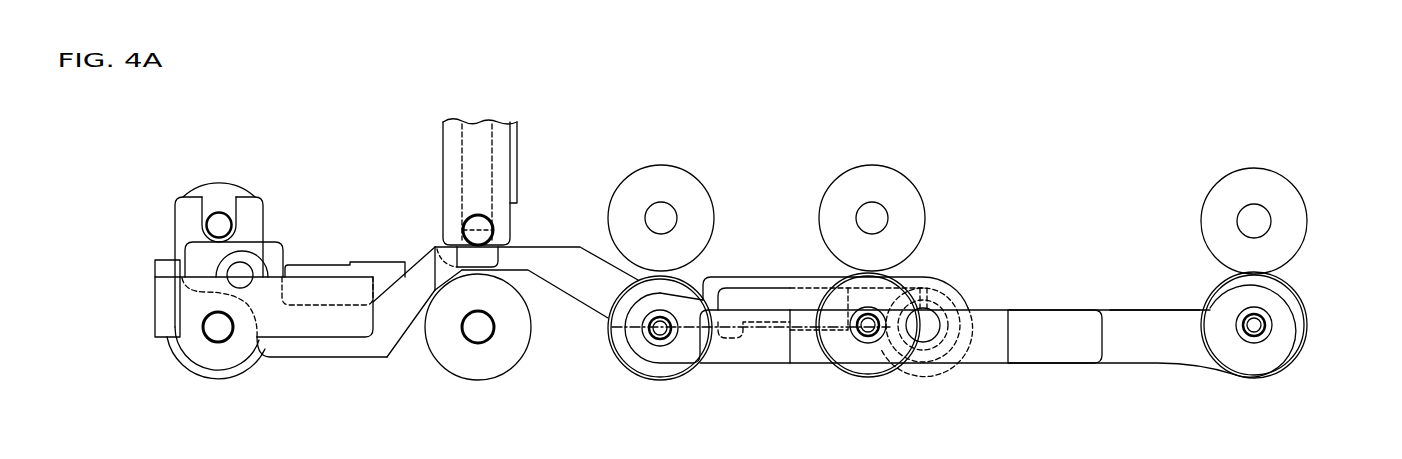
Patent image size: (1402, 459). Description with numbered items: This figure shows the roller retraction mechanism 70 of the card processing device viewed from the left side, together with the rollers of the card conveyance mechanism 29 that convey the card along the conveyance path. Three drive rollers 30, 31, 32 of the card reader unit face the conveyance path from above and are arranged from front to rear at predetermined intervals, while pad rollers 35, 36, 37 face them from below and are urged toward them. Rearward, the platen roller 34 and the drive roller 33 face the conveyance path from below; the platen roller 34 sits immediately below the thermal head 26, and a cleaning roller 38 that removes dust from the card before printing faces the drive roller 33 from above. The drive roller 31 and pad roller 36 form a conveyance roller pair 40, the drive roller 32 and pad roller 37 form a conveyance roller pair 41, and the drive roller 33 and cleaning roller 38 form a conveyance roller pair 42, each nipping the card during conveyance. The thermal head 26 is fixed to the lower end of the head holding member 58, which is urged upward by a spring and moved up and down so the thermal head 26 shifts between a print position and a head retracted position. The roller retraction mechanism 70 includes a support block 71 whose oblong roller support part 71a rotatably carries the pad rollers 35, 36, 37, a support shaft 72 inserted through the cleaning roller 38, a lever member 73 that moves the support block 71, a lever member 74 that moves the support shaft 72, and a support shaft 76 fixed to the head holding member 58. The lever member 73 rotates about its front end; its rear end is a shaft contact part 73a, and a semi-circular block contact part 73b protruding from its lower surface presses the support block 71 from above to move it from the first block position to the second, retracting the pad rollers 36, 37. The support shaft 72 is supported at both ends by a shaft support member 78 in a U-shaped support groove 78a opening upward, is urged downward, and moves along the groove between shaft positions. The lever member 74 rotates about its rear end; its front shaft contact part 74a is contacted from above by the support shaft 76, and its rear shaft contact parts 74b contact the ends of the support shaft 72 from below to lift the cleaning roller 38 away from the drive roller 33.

The thermal head 26 is at (460, 178).
The card conveyance mechanism 29 is at (1294, 193).
The drive roller 30 is at (1254, 168).
The drive roller 31 is at (872, 165).
The drive roller 32 is at (660, 165).
The drive roller 33 is at (218, 380).
The platen roller 34 is at (478, 380).
The pad roller 35 is at (1258, 378).
The pad roller 36 is at (868, 377).
The pad roller 37 is at (660, 380).
The cleaning roller 38 is at (210, 183).
The conveyance roller pair 40 is at (807, 273).
The conveyance roller pair 41 is at (575, 236).
The conveyance roller pair 42 is at (259, 274).
The head holding member 58 is at (443, 147).
The roller retraction mechanism 70 is at (1034, 343).
The support block 71 is at (1057, 364).
The roller support part 71a is at (1138, 309).
The support shaft 72 is at (223, 220).
The lever member 73 is at (768, 277).
The shaft contact part 73a is at (432, 247).
The block contact part 73b is at (733, 345).
The lever member 74 is at (320, 358).
The shaft contact part 74a is at (500, 258).
The shaft contact part 74b is at (200, 240).
The support shaft 76 is at (466, 220).
The shaft support member 78 is at (317, 263).
The support groove 78a is at (232, 217).